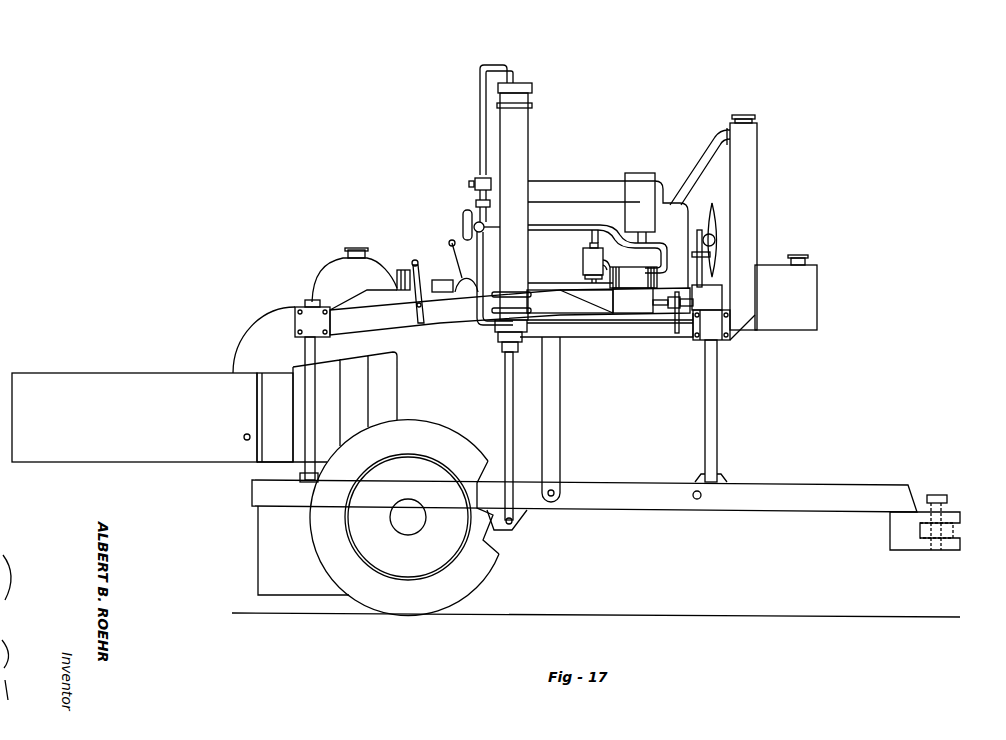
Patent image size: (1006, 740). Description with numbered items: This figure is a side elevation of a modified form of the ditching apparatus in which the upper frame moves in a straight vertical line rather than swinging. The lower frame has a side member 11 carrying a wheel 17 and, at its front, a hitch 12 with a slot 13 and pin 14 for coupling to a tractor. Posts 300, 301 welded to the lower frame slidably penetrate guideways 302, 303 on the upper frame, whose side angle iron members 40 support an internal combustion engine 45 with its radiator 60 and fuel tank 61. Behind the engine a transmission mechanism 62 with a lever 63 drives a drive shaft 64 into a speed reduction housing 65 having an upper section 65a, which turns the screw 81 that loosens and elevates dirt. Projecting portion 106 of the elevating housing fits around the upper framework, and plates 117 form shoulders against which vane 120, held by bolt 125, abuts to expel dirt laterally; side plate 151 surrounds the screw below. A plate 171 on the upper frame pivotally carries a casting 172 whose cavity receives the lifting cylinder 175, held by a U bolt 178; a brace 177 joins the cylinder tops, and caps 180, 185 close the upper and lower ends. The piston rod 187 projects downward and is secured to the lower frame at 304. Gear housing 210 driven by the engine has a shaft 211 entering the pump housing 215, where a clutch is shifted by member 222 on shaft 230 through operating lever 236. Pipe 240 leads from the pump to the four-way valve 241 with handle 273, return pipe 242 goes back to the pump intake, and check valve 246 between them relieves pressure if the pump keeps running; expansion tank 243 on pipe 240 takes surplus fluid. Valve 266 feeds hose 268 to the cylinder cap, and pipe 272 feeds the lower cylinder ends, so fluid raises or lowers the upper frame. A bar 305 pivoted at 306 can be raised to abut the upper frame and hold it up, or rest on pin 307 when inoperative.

The side member of the lower frame 11 is at (584, 496).
The hitch 12 is at (961, 548).
The slot 13 is at (955, 530).
The pin 14 is at (945, 496).
The wheel 17 is at (496, 562).
The side angle iron member of the upper frame 40 is at (630, 330).
The internal combustion engine 45 is at (608, 234).
The radiator 60 is at (757, 153).
The fuel tank 61 is at (786, 292).
The transmission mechanism 62 is at (467, 285).
The lever 63 is at (451, 241).
The drive shaft 64 is at (440, 280).
The speed reduction housing 65 is at (331, 270).
The upper section of speed reduction housing 65a is at (352, 282).
The screw 81 is at (327, 407).
The forwardly projecting portion 106 is at (393, 345).
The plate 117 is at (275, 417).
The vane 120 is at (153, 384).
The bolt 125 is at (244, 438).
The side plate 151 is at (303, 550).
The plate 171 is at (510, 311).
The casting 172 is at (530, 304).
The cylinder 175 is at (527, 121).
The brace 177 is at (535, 105).
The U bolt 178 is at (506, 292).
The cap 180 is at (529, 88).
The cap 185 is at (533, 328).
The piston rod 187 is at (505, 380).
The gear housing 210 is at (707, 297).
The shaft 211 is at (678, 293).
The centrifugal pump housing 215 is at (633, 290).
The member 222 is at (672, 333).
The shaft 230 is at (590, 330).
The operating lever 236 is at (413, 261).
The pipe 240 is at (670, 250).
The 4-way valve 241 is at (476, 205).
The return pipe 242 is at (580, 281).
The expansion tank 243 is at (642, 202).
The check valve 246 is at (583, 258).
The valve 266 is at (475, 184).
The flexible pipe 268 is at (498, 68).
The flexible pipe 272 is at (477, 300).
The handle 273 is at (463, 218).
The post 300 is at (717, 376).
The post 301 is at (316, 345).
The guideway 302 is at (722, 338).
The guideway 303 is at (331, 318).
The piston rod lower securement 304 is at (522, 520).
The bar 305 is at (562, 440).
The pivot 306 is at (556, 493).
The pin 307 is at (693, 495).